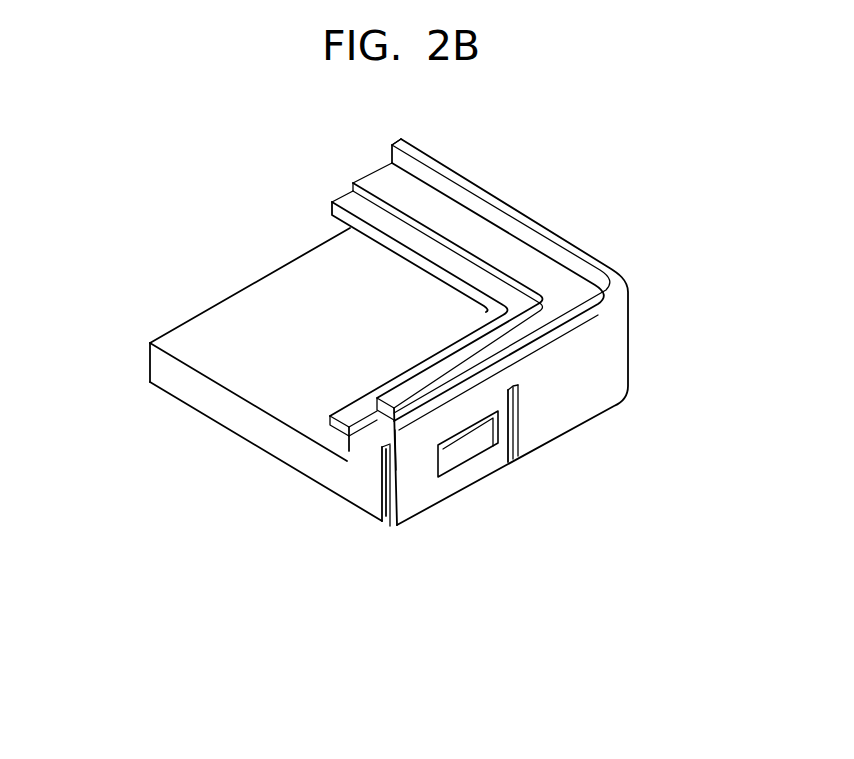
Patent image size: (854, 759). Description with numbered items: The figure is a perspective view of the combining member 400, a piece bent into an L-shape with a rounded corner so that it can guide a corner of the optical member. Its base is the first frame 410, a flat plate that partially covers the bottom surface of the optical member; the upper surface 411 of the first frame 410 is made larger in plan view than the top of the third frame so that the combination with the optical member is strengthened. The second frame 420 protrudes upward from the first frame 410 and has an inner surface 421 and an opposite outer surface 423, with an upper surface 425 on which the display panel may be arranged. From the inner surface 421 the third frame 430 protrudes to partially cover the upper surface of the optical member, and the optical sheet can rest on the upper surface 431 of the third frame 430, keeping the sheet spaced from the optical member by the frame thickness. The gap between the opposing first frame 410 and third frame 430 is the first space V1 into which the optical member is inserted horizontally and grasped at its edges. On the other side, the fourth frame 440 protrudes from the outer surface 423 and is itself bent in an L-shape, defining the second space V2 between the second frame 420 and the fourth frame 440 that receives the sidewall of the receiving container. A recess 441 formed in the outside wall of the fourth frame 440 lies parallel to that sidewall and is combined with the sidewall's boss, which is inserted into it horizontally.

The combining member 400 is at (205, 213).
The first frame 410 is at (221, 403).
The upper surface of the first frame 411 is at (242, 317).
The second frame 420 is at (356, 478).
The inner surface of the second frame 421 is at (345, 462).
The outer surface of the second frame 423 is at (385, 496).
The upper surface of the second frame 425 is at (381, 180).
The third frame 430 is at (329, 418).
The upper surface of the third frame 431 is at (348, 203).
The fourth frame 440 is at (411, 515).
The recess 441 is at (462, 442).
The first space V1 is at (338, 442).
The second space V2 is at (388, 492).